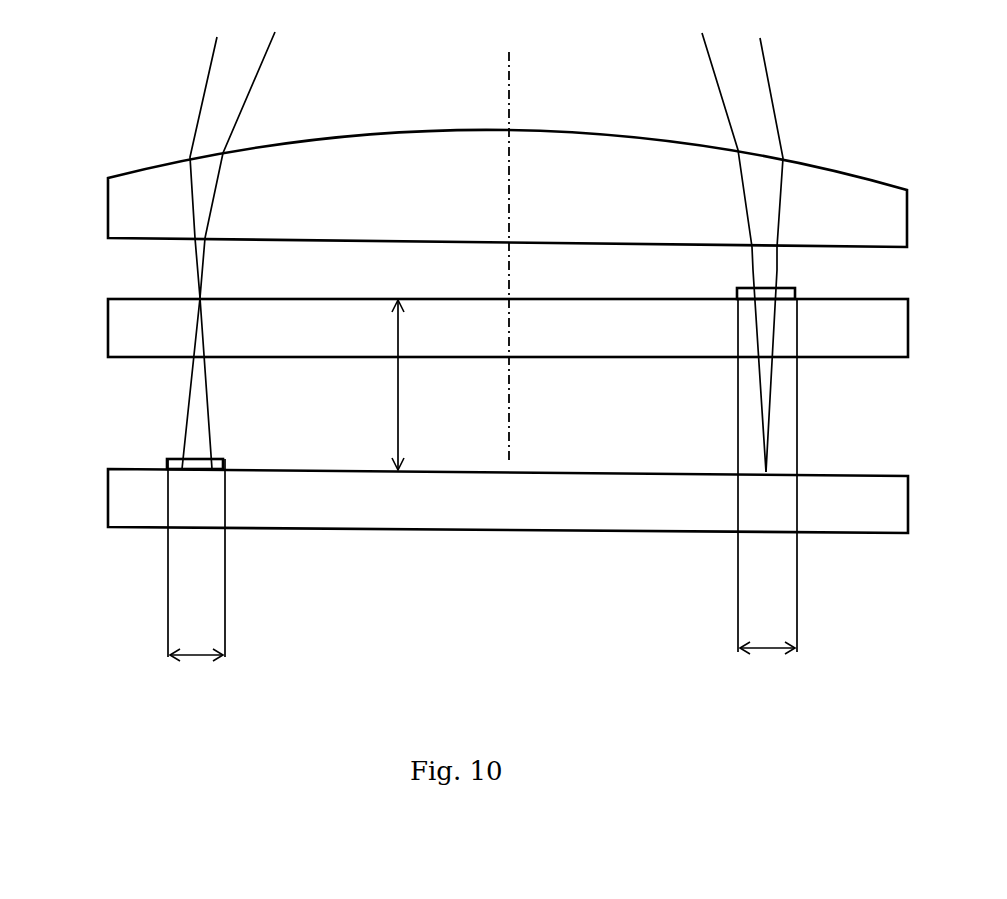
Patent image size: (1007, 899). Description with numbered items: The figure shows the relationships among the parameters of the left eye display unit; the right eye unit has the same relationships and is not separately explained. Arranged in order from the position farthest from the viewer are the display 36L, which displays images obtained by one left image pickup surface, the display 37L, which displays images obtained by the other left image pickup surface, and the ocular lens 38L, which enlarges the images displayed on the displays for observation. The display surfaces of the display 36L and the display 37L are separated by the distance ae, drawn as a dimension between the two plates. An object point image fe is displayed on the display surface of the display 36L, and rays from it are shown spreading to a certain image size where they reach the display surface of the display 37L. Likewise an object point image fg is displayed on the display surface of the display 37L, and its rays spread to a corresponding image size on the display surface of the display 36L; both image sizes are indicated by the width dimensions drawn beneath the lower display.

The display 36L is at (487, 508).
The display 37L is at (892, 335).
The ocular lens 38L is at (130, 190).
The object point image fg is at (165, 294).
The object point image fe is at (765, 472).
The distance between display surfaces ae is at (386, 385).